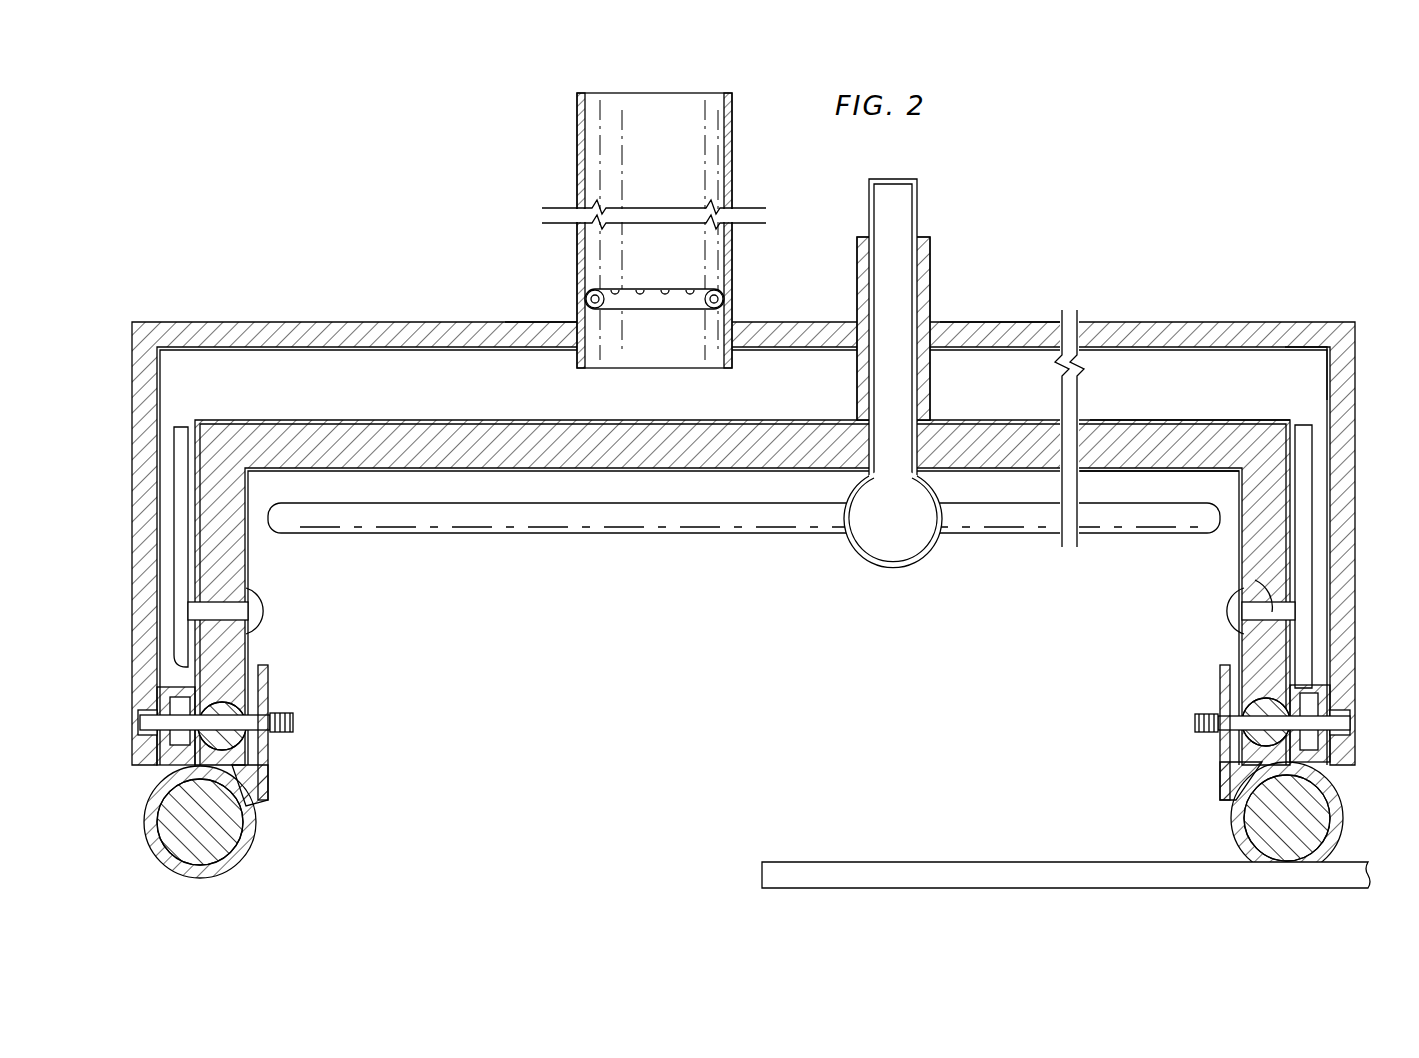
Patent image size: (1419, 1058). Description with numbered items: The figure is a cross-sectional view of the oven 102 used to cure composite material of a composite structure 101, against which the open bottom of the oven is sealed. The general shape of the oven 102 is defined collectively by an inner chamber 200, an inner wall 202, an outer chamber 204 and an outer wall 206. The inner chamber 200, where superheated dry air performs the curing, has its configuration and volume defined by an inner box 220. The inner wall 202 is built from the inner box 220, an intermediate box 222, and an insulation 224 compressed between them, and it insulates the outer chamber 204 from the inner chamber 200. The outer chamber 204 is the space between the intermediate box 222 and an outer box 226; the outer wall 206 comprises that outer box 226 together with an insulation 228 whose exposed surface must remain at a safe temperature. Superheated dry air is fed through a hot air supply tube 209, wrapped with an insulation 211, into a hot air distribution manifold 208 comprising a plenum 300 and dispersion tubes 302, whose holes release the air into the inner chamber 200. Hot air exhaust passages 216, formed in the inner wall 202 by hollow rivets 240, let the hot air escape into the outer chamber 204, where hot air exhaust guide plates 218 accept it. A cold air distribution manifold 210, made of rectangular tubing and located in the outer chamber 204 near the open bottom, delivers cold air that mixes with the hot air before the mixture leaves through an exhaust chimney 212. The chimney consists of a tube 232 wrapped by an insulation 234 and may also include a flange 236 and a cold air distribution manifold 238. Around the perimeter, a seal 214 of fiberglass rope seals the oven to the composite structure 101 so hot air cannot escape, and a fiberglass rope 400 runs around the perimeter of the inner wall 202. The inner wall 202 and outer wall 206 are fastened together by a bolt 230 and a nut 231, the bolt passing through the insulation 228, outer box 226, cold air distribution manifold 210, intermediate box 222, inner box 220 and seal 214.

The composite structure 101 is at (1036, 866).
The oven 102 is at (743, 505).
The inner chamber 200 is at (777, 703).
The inner wall 202 is at (392, 412).
The outer chamber 204 is at (742, 564).
The outer wall 206 is at (1224, 311).
The hot air distribution manifold 208 is at (898, 397).
The hot air supply tube 209 is at (922, 209).
The cold air distribution manifold 210 is at (1320, 680).
The insulation 211 is at (932, 263).
The exhaust chimney 212 is at (596, 217).
The seal 214 is at (1340, 827).
The hot air exhaust passages 216 is at (1255, 580).
The hot air exhaust guide plates 218 is at (1316, 590).
The inner box 220 is at (1118, 472).
The intermediate box 222 is at (1140, 420).
The insulation 224 is at (1212, 443).
The outer box 226 is at (1276, 352).
The insulation 228 is at (1018, 321).
The bolt 230 is at (1195, 721).
The nut 231 is at (1220, 743).
The tube 232 is at (638, 217).
The insulation 234 is at (580, 190).
The flange 236 is at (525, 338).
The cold air distribution manifold 238 is at (657, 288).
The hollow rivets 240 is at (1232, 612).
The plenum 300 is at (910, 570).
The dispersion tubes 302 is at (466, 540).
The fiberglass rope 400 is at (1252, 722).